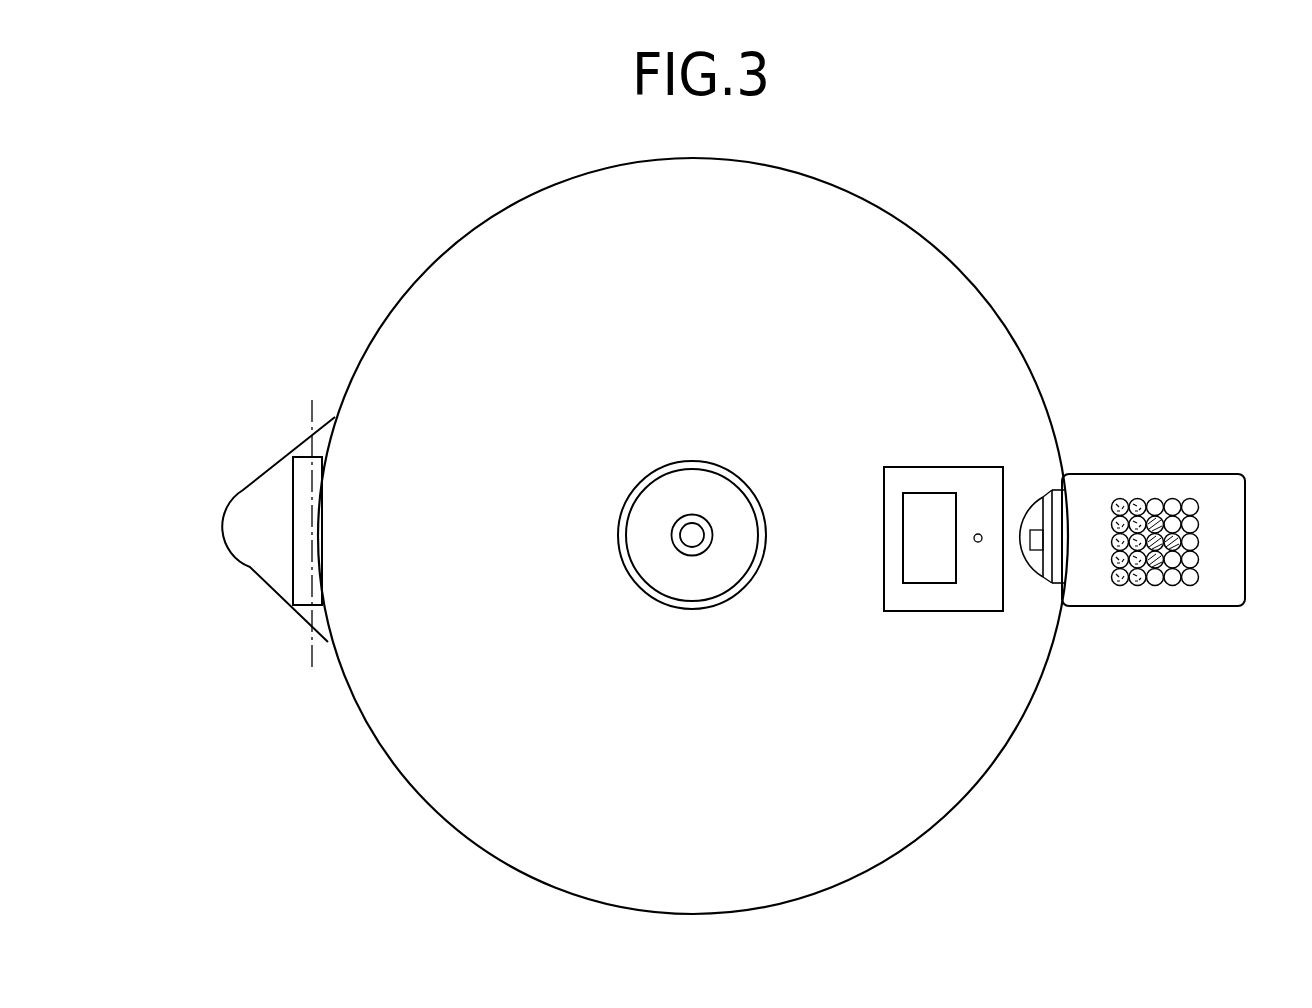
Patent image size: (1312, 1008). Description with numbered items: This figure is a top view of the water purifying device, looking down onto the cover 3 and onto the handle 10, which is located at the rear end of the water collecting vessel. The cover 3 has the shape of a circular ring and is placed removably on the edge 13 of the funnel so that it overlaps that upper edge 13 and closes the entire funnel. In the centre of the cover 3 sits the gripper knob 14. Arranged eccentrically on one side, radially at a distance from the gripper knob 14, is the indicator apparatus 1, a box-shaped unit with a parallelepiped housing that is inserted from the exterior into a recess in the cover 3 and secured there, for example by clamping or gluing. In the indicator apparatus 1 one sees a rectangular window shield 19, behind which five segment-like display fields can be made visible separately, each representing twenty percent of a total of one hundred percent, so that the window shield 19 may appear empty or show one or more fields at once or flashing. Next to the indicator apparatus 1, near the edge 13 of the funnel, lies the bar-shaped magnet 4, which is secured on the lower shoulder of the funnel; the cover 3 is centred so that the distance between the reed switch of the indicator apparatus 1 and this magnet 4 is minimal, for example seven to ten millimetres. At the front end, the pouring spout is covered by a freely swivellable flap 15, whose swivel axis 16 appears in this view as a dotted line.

The cover 3 is at (917, 298).
The gripper knob 14 is at (662, 575).
The swivel axis 16 is at (312, 417).
The flap 15 is at (272, 563).
The indicator apparatus 1 is at (910, 612).
The window shield 19 is at (932, 513).
The edge of the funnel 13 is at (1043, 507).
The bar-shaped magnet 4 is at (1027, 557).
The handle 10 is at (1220, 490).